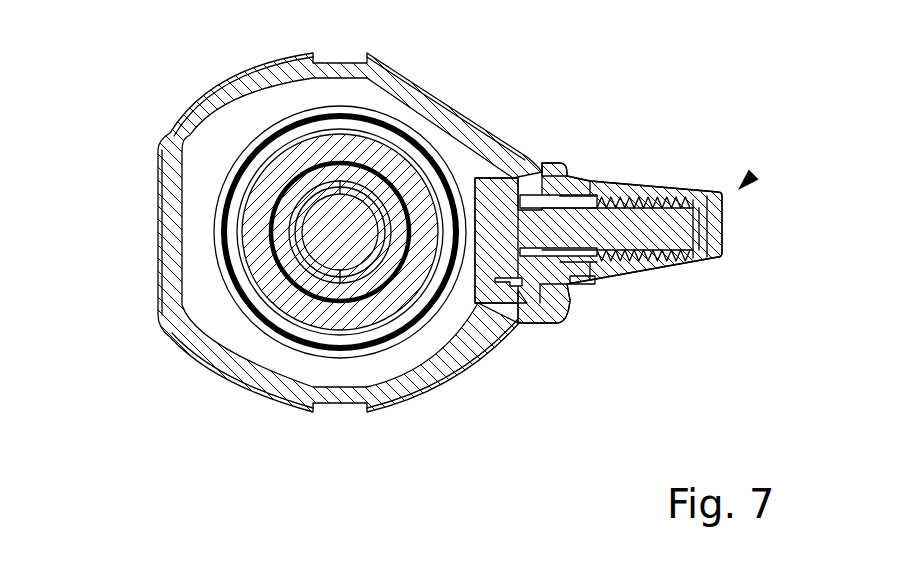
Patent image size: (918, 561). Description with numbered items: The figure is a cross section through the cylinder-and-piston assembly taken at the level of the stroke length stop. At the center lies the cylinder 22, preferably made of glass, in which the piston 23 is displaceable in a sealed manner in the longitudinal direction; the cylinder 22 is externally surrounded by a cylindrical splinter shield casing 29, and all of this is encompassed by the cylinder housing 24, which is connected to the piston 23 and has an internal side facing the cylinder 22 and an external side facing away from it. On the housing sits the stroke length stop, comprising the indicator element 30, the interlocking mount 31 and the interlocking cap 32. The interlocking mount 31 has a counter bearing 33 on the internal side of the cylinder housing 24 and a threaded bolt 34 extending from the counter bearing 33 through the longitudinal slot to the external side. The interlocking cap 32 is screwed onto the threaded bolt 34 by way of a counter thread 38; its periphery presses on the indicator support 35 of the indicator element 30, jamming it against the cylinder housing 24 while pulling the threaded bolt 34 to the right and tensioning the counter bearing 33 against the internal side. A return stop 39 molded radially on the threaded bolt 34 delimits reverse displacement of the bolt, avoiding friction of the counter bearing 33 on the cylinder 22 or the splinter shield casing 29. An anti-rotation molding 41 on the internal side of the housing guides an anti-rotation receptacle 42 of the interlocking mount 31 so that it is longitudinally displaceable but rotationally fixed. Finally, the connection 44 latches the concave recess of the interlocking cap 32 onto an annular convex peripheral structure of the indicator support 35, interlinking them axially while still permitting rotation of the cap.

The cylinder 22 is at (280, 305).
The piston 23 is at (280, 208).
The cylinder housing 24 is at (172, 238).
The splinter shield casing 29 is at (240, 150).
The indicator element 30 is at (548, 135).
The interlocking mount 31 is at (484, 150).
The interlocking cap 32 is at (752, 176).
The counter bearing 33 is at (483, 295).
The threaded bolt 34 is at (622, 200).
The indicator support 35 is at (560, 312).
The counter thread 38 is at (672, 191).
The return stop 39 is at (583, 172).
The anti-rotation molding 41 is at (526, 303).
The anti-rotation receptacle 42 is at (520, 300).
The connection 44 is at (595, 283).